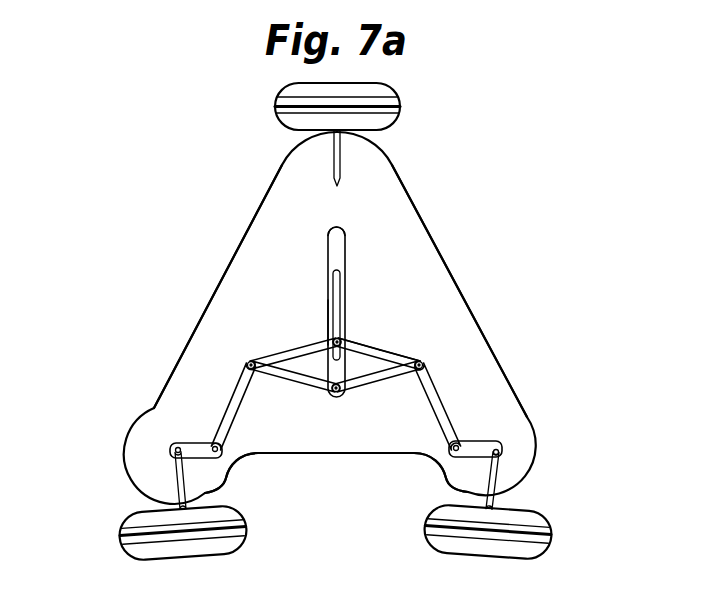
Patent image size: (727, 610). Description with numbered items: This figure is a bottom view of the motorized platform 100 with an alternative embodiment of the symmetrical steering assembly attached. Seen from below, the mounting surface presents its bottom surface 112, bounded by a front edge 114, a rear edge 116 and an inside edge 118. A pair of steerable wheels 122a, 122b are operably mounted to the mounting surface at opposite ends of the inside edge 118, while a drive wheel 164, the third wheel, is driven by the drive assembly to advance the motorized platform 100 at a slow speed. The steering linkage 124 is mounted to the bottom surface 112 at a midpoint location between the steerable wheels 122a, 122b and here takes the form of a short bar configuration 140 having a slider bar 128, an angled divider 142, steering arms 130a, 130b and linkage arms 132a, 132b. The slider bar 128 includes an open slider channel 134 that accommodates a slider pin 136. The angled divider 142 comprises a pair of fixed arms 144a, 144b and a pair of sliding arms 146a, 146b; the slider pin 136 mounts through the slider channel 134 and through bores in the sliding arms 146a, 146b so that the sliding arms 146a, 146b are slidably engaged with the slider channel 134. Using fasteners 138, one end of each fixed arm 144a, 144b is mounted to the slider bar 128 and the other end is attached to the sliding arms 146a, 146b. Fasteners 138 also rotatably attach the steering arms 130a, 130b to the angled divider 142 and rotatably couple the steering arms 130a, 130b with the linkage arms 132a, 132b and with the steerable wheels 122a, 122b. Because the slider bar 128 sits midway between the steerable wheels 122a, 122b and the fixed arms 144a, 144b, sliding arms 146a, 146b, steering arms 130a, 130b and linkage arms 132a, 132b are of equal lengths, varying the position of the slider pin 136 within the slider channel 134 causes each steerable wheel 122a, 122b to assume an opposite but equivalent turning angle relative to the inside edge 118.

The motorized platform 100 is at (164, 156).
The bottom surface 112 is at (287, 185).
The front edge 114 is at (260, 203).
The rear edge 116 is at (393, 172).
The inside edge 118 is at (403, 452).
The steerable wheel 122a is at (183, 556).
The steerable wheel 122b is at (505, 557).
The steering linkage 124 is at (367, 340).
The slider bar 128 is at (328, 250).
The steering arm 130a is at (232, 398).
The steering arm 130b is at (440, 408).
The linkage arm 132a is at (190, 443).
The linkage arm 132b is at (500, 445).
The slider channel 134 is at (328, 280).
The slider pin 136 is at (328, 327).
The fastener 138 is at (250, 362).
The short bar configuration 140 is at (343, 243).
The angled divider 142 is at (405, 352).
The fixed arm 144a is at (323, 340).
The fixed arm 144b is at (417, 360).
The sliding arm 146a is at (290, 380).
The sliding arm 146b is at (420, 376).
The drive wheel 164 is at (398, 95).